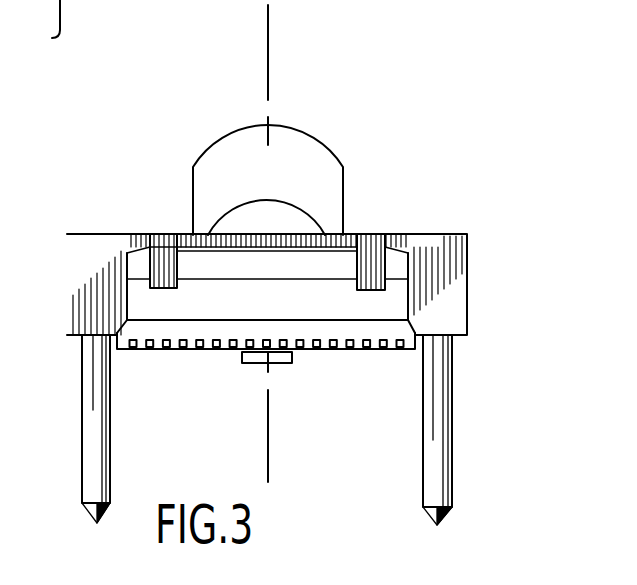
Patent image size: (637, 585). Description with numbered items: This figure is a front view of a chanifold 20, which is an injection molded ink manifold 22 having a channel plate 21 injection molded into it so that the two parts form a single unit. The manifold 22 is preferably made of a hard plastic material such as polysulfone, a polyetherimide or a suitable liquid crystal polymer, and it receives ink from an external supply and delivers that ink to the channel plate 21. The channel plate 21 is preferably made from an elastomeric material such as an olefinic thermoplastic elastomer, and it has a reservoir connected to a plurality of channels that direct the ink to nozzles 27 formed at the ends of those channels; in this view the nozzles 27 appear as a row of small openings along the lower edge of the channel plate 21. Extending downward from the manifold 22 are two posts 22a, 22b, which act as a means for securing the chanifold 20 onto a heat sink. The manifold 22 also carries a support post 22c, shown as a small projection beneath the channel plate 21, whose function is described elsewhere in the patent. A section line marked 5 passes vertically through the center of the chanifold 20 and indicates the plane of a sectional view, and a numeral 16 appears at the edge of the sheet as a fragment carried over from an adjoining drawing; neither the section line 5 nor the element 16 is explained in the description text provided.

The section line 5- 5 is at (268, 42).
The element 16 is at (0, 8).
The chanifold 20 is at (357, 130).
The channel plate 21 is at (343, 352).
The ink manifold 22 is at (446, 234).
The post 22a is at (92, 427).
The post 22b is at (432, 482).
The support post 22c is at (273, 363).
The nozzles 27 is at (178, 350).